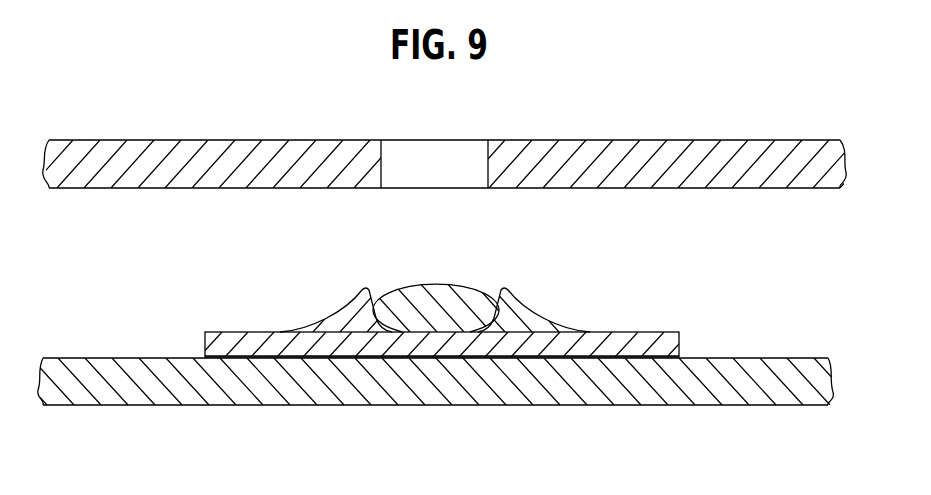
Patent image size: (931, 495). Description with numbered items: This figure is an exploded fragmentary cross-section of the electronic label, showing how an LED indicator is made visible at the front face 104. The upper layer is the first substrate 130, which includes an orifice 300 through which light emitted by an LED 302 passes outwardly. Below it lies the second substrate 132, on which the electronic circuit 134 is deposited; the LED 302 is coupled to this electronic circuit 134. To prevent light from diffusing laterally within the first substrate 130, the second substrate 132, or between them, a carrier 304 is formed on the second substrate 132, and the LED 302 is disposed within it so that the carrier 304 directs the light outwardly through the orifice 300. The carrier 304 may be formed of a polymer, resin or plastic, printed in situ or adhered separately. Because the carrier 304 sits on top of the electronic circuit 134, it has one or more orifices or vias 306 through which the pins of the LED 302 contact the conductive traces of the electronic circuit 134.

The front face 104 is at (657, 140).
The orifice 300 is at (465, 155).
The first substrate 130 is at (840, 168).
The second substrate 132 is at (130, 385).
The electronic circuit 134 is at (683, 347).
The LED 302 is at (477, 298).
The carrier 304 is at (317, 315).
The orifices or vias 306 is at (405, 357).